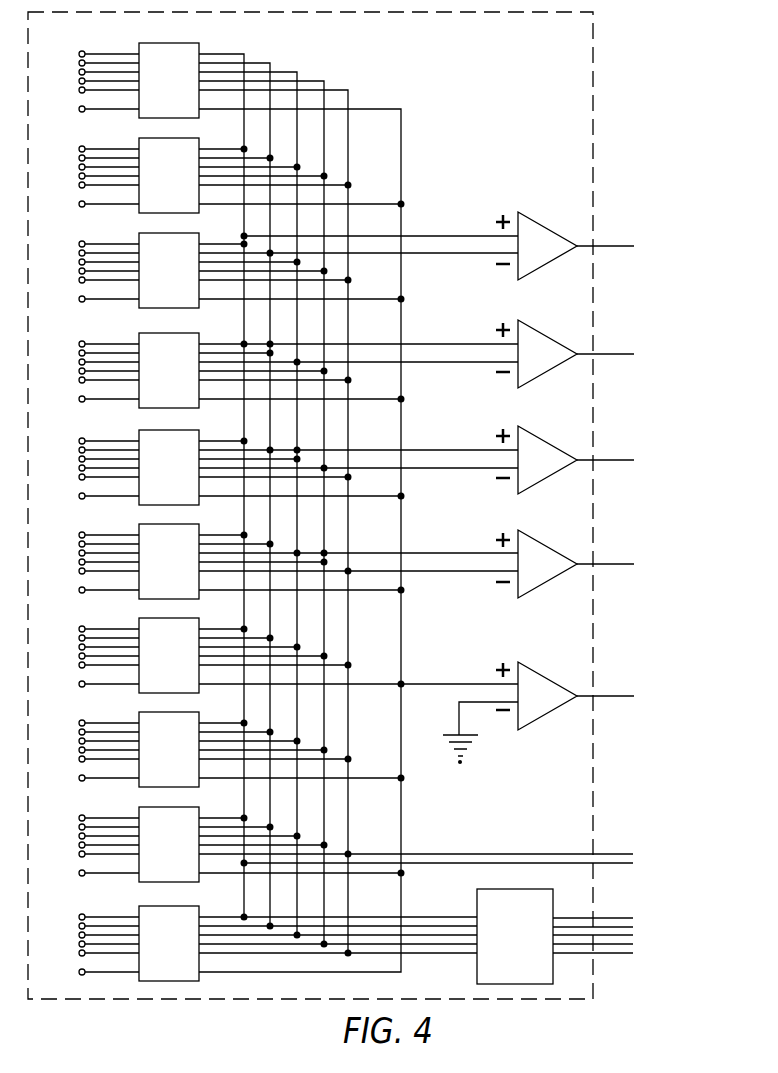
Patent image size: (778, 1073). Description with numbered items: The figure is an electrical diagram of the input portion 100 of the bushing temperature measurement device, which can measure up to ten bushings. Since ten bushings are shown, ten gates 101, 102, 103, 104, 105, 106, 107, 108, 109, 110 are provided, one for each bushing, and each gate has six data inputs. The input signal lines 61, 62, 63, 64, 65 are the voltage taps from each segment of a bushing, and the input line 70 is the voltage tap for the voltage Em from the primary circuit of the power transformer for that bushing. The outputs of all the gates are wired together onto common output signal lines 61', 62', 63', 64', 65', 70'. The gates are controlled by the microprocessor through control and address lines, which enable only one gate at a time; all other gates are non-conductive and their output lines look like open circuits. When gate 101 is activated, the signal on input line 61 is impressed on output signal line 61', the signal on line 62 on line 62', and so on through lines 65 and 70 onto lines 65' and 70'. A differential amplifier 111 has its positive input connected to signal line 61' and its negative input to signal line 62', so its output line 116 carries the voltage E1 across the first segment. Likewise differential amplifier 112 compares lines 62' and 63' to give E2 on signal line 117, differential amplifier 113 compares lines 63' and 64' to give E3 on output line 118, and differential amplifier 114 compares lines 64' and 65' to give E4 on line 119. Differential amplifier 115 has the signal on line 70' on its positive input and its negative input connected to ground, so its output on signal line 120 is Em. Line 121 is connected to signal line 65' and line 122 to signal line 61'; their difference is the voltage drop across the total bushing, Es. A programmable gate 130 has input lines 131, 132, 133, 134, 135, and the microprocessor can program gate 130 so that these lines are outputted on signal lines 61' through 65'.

The input signal line 61 is at (109, 39).
The input signal line 62 is at (87, 44).
The input signal line 63 is at (87, 60).
The input signal line 64 is at (88, 78).
The input signal line 65 is at (88, 99).
The input line 70 is at (89, 120).
The output signal line 61' is at (226, 471).
The output signal line 62' is at (245, 475).
The output signal line 63' is at (261, 481).
The output signal line 64' is at (290, 488).
The output signal line 65' is at (303, 508).
The output signal line 70' is at (330, 536).
The input portion 100 is at (594, 79).
The gate 101 is at (169, 80).
The gate 102 is at (240, 175).
The gate 103 is at (240, 270).
The gate 104 is at (240, 370).
The gate 105 is at (240, 467).
The gate 106 is at (240, 561).
The gate 107 is at (240, 655).
The gate 108 is at (240, 749).
The gate 109 is at (240, 844).
The gate 110 is at (278, 943).
The differential amplifier 111 is at (410, 246).
The differential amplifier 112 is at (410, 354).
The differential amplifier 113 is at (423, 460).
The differential amplifier 114 is at (437, 564).
The differential amplifier 115 is at (489, 712).
The output line 116 is at (625, 246).
The signal line 117 is at (626, 354).
The output line 118 is at (625, 460).
The line 119 is at (625, 564).
The signal line 120 is at (625, 696).
The line 121 is at (633, 854).
The line 122 is at (633, 863).
The programmable gate 130 is at (515, 936).
The input line 131 is at (608, 917).
The input line 132 is at (633, 927).
The input line 133 is at (633, 935).
The input line 134 is at (633, 944).
The input line 135 is at (633, 953).